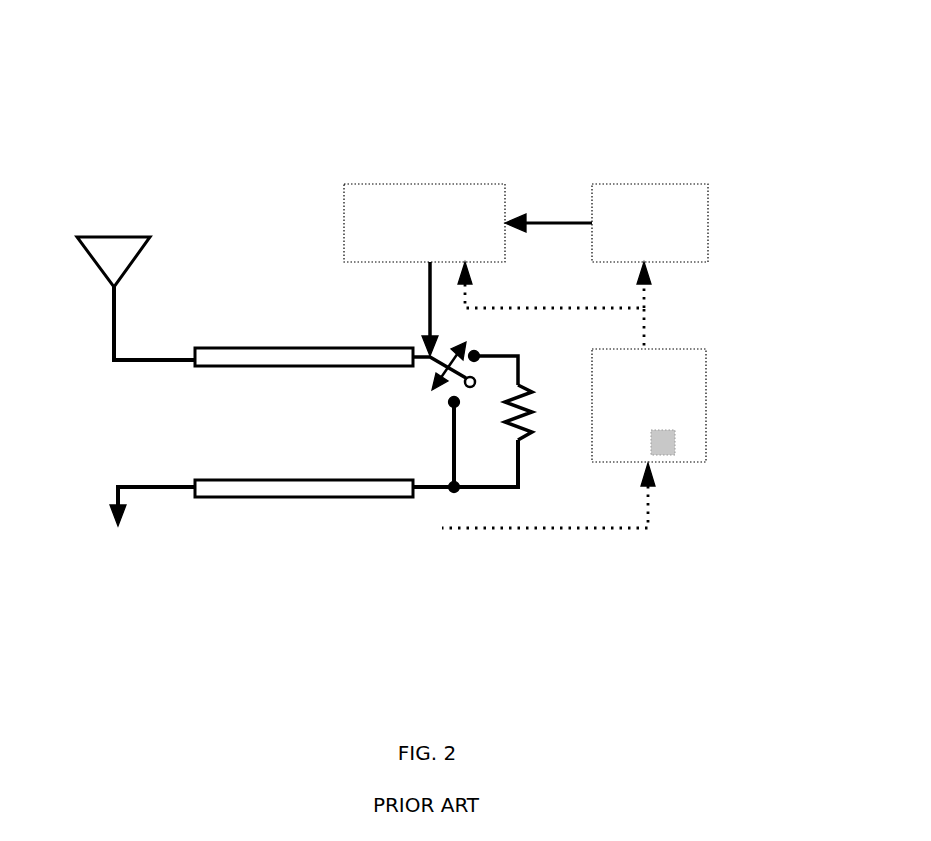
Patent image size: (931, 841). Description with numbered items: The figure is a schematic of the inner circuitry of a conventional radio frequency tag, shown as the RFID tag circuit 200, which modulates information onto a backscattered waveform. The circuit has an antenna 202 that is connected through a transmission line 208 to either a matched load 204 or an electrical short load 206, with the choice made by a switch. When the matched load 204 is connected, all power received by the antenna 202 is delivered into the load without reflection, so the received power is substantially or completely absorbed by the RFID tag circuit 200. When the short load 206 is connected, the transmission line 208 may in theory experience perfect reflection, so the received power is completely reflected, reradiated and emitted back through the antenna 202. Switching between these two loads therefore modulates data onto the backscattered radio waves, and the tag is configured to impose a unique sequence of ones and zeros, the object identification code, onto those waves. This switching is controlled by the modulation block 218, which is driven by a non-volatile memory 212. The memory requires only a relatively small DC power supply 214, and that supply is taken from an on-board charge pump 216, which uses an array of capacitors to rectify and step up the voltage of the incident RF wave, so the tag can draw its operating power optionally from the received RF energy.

The RFID tag circuit 200 is at (425, 25).
The antenna 202 is at (108, 258).
The matched load 204 is at (528, 435).
The electrical short load 206 is at (268, 497).
The transmission line 208 is at (137, 353).
The non-volatile memory 212 is at (630, 183).
The DC power supply 214 is at (698, 365).
The charge pump 216 is at (675, 447).
The modulation block 218 is at (453, 184).